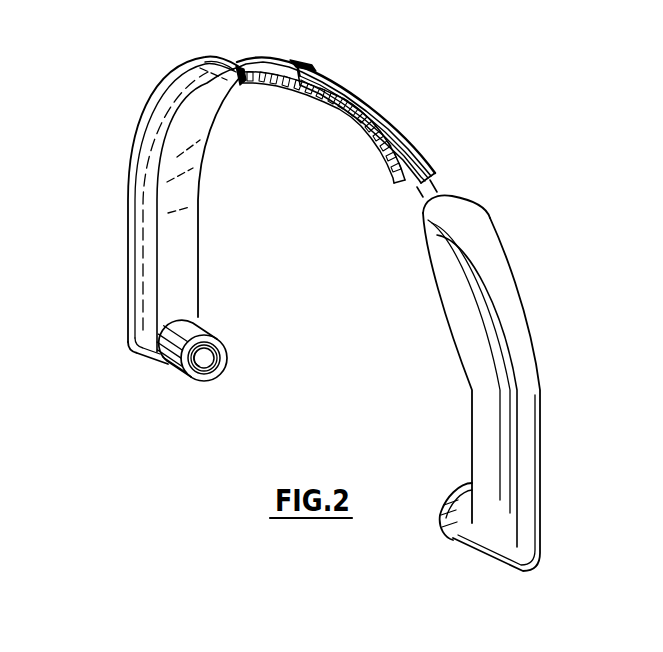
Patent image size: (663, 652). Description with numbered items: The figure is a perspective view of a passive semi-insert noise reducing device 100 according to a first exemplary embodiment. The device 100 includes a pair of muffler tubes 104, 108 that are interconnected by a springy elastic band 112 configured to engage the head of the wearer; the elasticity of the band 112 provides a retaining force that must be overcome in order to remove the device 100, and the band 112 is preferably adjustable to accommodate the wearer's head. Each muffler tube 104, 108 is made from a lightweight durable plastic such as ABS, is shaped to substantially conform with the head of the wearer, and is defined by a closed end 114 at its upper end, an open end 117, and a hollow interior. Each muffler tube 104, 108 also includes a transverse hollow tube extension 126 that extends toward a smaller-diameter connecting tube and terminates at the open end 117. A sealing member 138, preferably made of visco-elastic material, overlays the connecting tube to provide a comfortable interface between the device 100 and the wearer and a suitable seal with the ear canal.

The passive semi-insert noise reducing device 100 is at (62, 98).
The muffler tube 104 is at (128, 242).
The muffler tube 108 is at (535, 412).
The springy elastic band 112 is at (337, 80).
The closed end 114 is at (193, 58).
The open end 117 is at (221, 358).
The transverse hollow tube extension 126 is at (167, 357).
The sealing member 138 is at (208, 381).